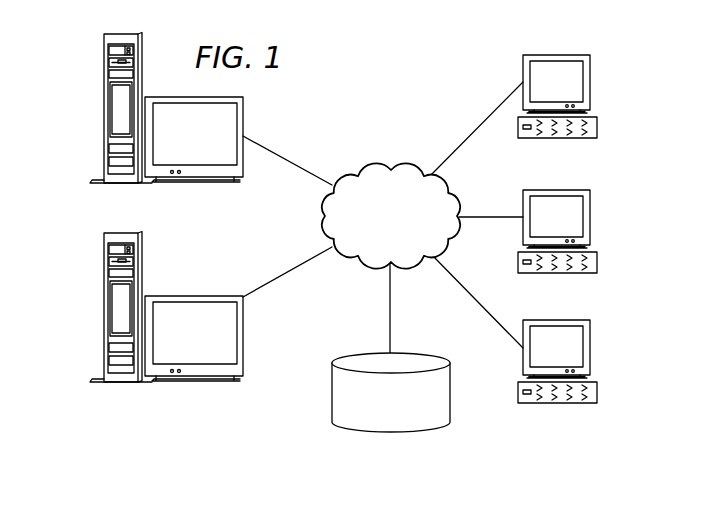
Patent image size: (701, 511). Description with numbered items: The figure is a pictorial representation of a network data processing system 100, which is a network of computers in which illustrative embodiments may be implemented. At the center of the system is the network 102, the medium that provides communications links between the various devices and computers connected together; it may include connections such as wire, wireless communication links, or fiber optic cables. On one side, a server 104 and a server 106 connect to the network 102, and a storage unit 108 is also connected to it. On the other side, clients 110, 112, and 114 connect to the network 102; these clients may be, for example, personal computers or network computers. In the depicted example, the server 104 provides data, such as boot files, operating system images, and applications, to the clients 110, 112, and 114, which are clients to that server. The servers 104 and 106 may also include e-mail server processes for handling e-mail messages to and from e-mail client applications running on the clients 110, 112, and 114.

The network data processing system 100 is at (436, 65).
The network 102 is at (365, 170).
The server 104 is at (103, 110).
The server 106 is at (103, 307).
The storage unit 108 is at (375, 432).
The client 110 is at (591, 82).
The client 112 is at (591, 217).
The client 114 is at (591, 348).